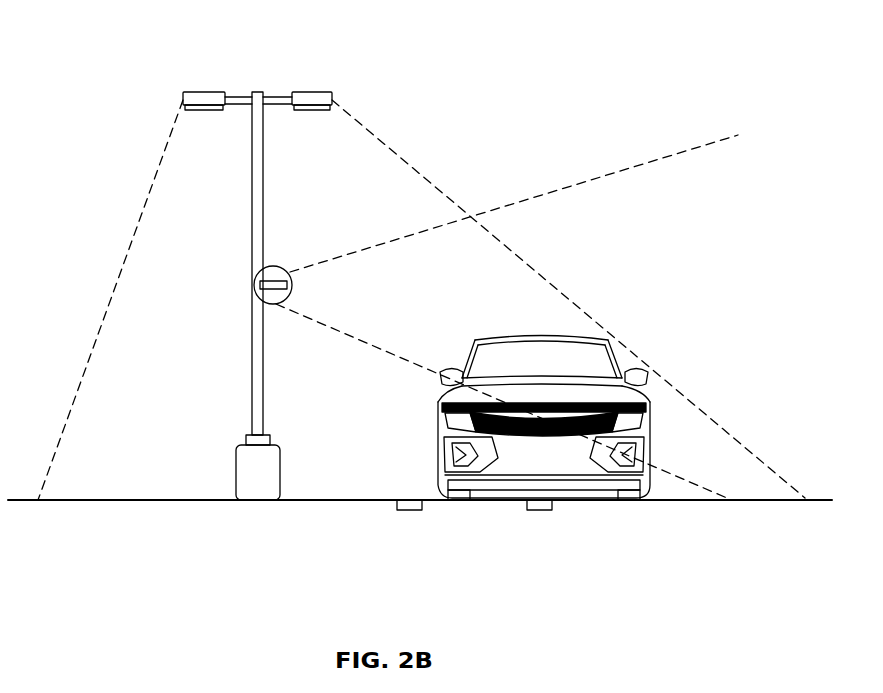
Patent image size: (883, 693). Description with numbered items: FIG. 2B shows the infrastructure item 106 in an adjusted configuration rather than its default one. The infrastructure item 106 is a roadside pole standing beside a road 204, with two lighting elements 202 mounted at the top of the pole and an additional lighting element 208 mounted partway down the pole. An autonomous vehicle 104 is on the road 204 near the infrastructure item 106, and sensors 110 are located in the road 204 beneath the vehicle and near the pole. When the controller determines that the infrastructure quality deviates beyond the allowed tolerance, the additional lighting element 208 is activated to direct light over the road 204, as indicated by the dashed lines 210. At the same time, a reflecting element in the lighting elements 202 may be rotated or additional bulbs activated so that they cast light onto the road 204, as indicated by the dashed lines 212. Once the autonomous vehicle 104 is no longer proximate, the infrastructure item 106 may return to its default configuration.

The autonomous vehicle 104 is at (528, 335).
The infrastructure item 106 is at (122, 115).
The sensors 110 is at (410, 510).
The lighting elements 202 is at (207, 92).
The road 204 is at (342, 498).
The additional lighting element 208 is at (255, 297).
The lines 210 is at (585, 175).
The lines 212 is at (150, 185).